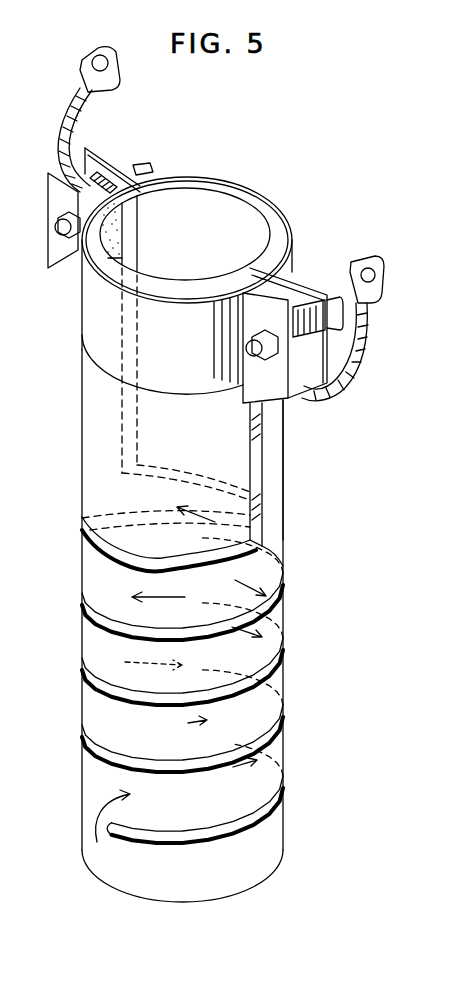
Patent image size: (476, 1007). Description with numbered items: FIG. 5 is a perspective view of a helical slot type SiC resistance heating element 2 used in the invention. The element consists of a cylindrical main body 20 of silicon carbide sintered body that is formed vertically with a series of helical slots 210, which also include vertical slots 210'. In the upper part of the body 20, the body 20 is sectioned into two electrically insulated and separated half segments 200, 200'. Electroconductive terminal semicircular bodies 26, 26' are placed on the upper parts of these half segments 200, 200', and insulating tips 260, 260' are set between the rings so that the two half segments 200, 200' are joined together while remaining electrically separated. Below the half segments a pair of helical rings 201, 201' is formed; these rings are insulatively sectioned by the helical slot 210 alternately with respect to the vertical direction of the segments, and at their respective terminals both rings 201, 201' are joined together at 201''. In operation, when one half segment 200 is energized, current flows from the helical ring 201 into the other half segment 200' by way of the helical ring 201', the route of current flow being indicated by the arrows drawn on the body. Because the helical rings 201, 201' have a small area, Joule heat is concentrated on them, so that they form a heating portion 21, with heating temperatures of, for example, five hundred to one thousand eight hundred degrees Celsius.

The SiC resistance heating element 2 is at (299, 771).
The electroconductive terminal semicircular body 26 is at (187, 259).
The electroconductive terminal semicircular body 26' is at (213, 238).
The insulating tip 260 is at (313, 324).
The insulating tip 260' is at (140, 159).
The cylindrical main body 20 is at (318, 483).
The half segment 200 is at (291, 484).
The half segment 200' is at (319, 470).
The helical slot 210 is at (151, 674).
The vertical slot 210' is at (190, 409).
The heating portion 21 is at (192, 703).
The helical ring 201 is at (84, 654).
The helical ring 201' is at (192, 767).
The joint of helical rings 201'' is at (51, 876).